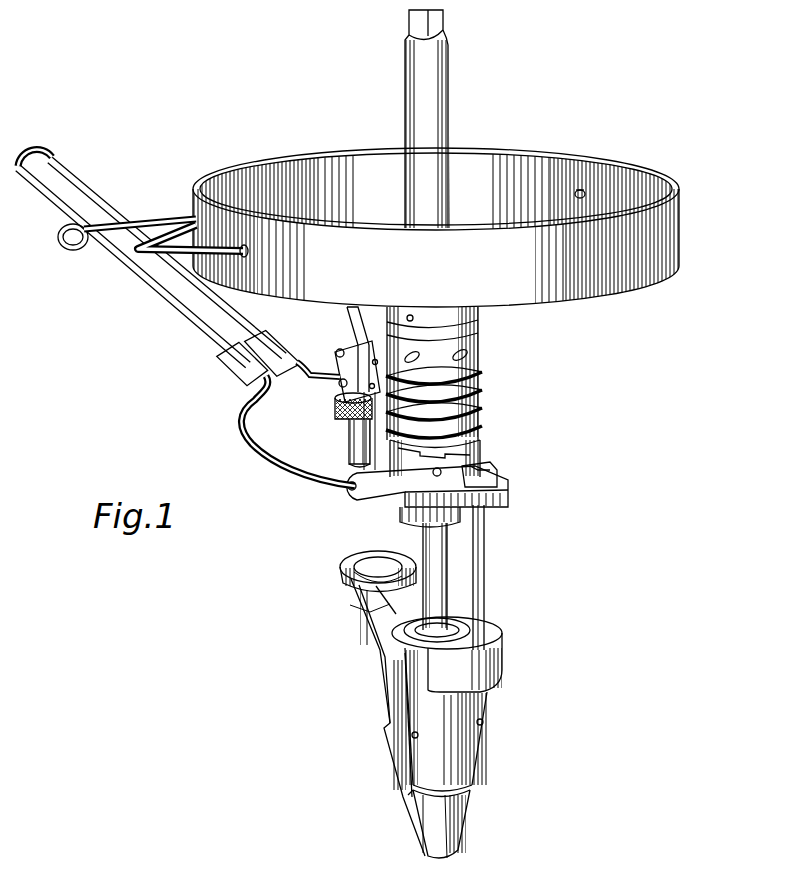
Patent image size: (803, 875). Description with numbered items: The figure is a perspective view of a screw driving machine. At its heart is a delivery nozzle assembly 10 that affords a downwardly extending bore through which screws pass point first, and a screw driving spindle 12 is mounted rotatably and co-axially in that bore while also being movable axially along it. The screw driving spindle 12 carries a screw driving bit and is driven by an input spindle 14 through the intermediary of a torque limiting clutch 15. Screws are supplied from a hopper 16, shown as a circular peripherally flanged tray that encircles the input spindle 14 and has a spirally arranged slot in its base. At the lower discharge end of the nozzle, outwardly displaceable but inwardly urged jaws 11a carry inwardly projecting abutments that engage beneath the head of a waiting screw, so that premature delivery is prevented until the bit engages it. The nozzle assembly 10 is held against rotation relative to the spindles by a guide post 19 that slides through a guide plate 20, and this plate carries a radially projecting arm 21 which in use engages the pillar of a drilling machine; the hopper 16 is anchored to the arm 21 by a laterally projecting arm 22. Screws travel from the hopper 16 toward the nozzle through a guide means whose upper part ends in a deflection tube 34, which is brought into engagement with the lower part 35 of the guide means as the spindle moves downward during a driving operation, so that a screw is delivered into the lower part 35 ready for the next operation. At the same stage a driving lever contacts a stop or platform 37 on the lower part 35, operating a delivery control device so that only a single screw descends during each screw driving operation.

The delivery nozzle assembly 10 is at (490, 727).
The jaws 11a is at (466, 818).
The screw driving spindle 12 is at (440, 563).
The input spindle 14 is at (443, 105).
The torque limiting clutch 15 is at (478, 340).
The hopper 16 is at (553, 286).
The guide post 19 is at (485, 602).
The guide plate 20 is at (500, 496).
The radially projecting arm 21 is at (158, 300).
The laterally projecting arm 22 is at (148, 220).
The deflection tube 34 is at (349, 440).
The lower part of the guide means 35 is at (360, 609).
The stop or platform 37 is at (401, 558).